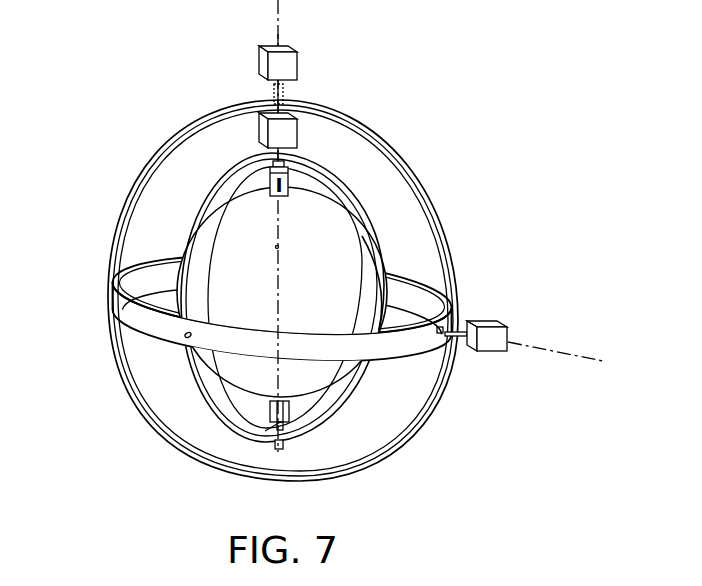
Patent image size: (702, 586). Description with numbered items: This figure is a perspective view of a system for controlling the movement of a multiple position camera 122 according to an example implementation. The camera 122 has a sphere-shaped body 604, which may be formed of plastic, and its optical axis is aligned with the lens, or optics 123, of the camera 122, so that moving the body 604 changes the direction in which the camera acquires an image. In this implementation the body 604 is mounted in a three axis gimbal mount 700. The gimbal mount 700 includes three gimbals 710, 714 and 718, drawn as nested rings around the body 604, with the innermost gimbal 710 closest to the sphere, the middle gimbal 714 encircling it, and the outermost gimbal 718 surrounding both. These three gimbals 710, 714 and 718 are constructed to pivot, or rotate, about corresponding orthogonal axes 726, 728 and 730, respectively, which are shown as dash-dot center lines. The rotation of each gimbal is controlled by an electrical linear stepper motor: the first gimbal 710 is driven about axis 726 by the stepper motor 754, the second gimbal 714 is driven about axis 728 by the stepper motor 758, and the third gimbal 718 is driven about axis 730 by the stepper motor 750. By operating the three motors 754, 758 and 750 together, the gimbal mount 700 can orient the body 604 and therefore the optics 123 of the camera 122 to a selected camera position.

The three axis gimbal mount 700 is at (502, 93).
The sphere-shaped body 604 is at (333, 247).
The optics 123 is at (362, 256).
The camera 122 is at (330, 373).
The gimbal 710 is at (328, 170).
The gimbal 714 is at (380, 352).
The gimbal 718 is at (430, 198).
The axis 726 is at (277, 247).
The axis 728 is at (537, 347).
The axis 730 is at (279, 38).
The electrical linear stepper motor 750 is at (298, 62).
The electrical linear stepper motor 754 is at (297, 134).
The electrical linear stepper motor 758 is at (493, 352).